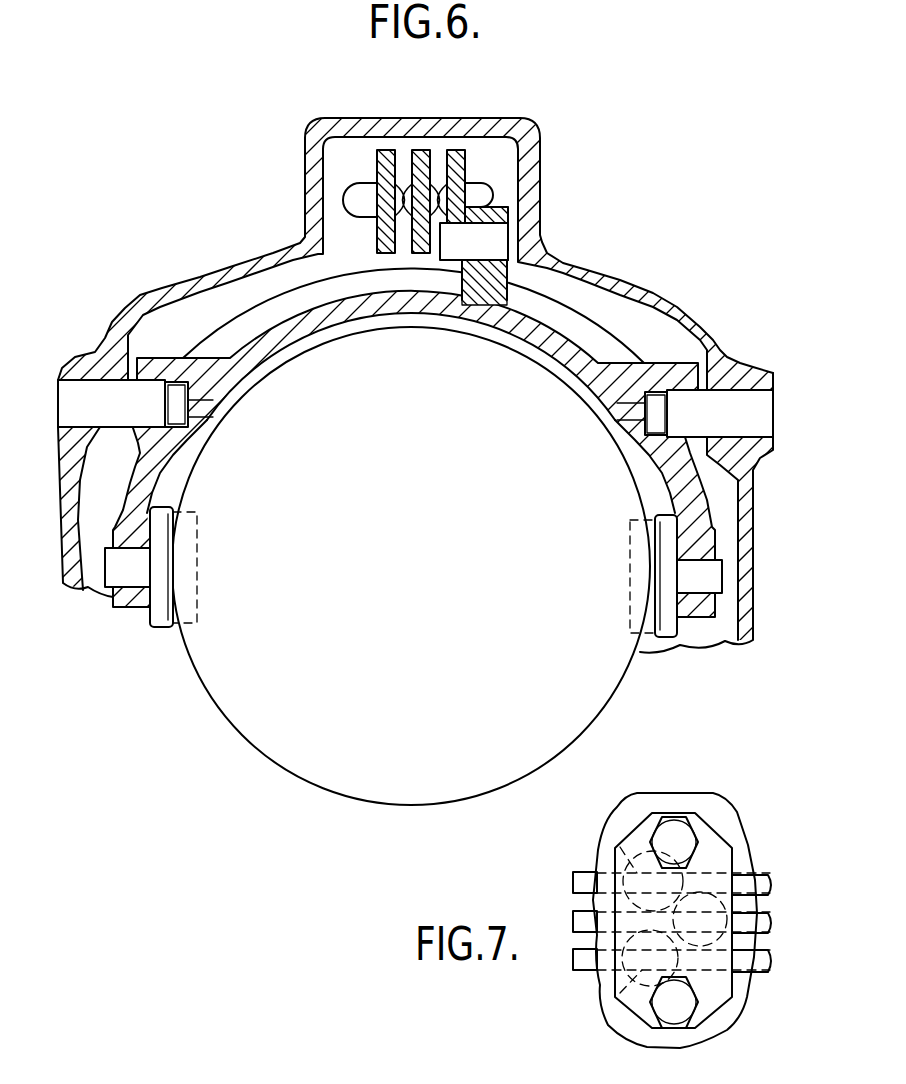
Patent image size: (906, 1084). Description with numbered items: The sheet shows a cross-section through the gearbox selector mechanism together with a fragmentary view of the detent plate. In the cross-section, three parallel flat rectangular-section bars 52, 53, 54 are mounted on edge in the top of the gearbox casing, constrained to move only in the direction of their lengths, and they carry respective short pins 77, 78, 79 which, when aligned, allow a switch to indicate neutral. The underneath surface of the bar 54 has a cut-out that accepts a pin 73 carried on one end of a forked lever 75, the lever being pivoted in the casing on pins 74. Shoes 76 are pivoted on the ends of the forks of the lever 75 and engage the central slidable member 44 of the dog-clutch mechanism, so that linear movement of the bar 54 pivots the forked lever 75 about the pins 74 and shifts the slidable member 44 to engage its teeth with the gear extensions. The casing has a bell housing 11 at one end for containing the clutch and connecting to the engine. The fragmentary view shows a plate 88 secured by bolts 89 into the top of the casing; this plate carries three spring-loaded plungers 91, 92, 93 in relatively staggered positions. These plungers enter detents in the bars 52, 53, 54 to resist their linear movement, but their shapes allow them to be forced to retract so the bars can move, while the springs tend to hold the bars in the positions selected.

In FIG. 7, the bell housing 11 is at (650, 800).
In FIG. 6, the central slidable member 44 is at (213, 652).
In FIG. 6, the bar 52 is at (387, 157).
In FIG. 7, the bar 52 is at (578, 960).
In FIG. 6, the bar 53 is at (425, 157).
In FIG. 7, the bar 53 is at (580, 922).
In FIG. 6, the bar 54 is at (458, 157).
In FIG. 7, the bar 54 is at (577, 877).
In FIG. 6, the pin 73 is at (480, 236).
In FIG. 6, the pins 74 is at (105, 417).
In FIG. 6, the forked lever 75 is at (203, 375).
In FIG. 6, the shoes 76 is at (157, 552).
In FIG. 6, the short pin 77 is at (368, 212).
In FIG. 6, the short pin 78 is at (398, 187).
In FIG. 6, the short pin 79 is at (478, 197).
In FIG. 7, the plate 88 is at (713, 853).
In FIG. 7, the bolts 89 is at (682, 837).
In FIG. 7, the spring loaded plunger 91 is at (620, 993).
In FIG. 7, the spring loaded plunger 92 is at (740, 915).
In FIG. 7, the spring loaded plunger 93 is at (620, 847).